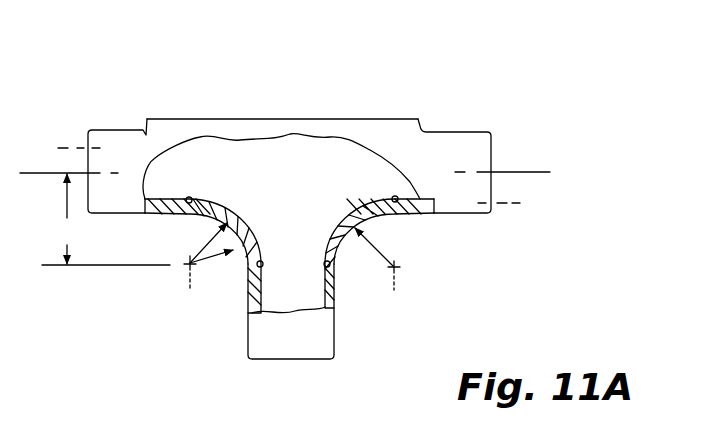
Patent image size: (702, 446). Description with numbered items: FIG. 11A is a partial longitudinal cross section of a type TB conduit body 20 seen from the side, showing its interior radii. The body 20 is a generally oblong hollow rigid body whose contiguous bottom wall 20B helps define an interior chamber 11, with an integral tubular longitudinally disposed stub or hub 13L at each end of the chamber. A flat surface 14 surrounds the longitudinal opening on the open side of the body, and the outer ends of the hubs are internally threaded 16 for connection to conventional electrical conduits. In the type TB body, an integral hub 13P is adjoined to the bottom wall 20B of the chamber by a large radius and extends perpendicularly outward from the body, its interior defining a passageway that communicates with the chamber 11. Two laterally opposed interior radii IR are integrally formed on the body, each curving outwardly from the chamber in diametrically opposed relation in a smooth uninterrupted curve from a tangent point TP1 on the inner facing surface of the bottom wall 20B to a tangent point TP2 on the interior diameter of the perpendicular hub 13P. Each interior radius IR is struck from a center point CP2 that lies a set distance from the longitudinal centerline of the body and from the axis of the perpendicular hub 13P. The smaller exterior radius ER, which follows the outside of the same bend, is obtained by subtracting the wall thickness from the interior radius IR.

The conduit body 20 is at (518, 86).
The longitudinally disposed hub 13L is at (117, 142).
The flat surface 14 is at (188, 119).
The perpendicular hub 13P is at (334, 338).
The bottom wall 20B is at (157, 199).
The interior chamber 11 is at (306, 179).
The internal threads 16 is at (285, 176).
The tangent point TP1 is at (191, 198).
The tangent point TP2 is at (324, 263).
The interior radius IR is at (215, 235).
The exterior radius ER is at (213, 263).
The center point CP2 is at (106, 219).